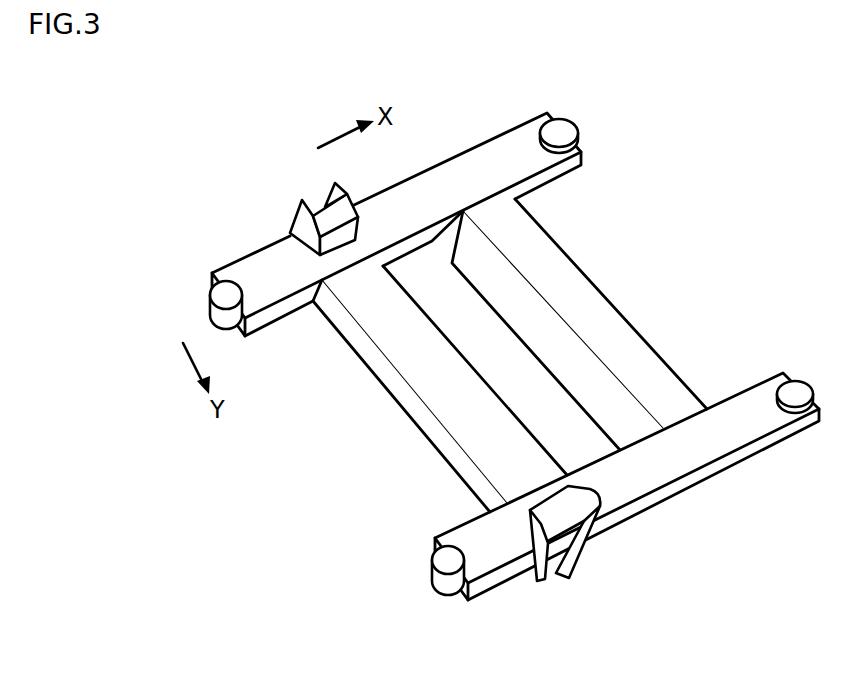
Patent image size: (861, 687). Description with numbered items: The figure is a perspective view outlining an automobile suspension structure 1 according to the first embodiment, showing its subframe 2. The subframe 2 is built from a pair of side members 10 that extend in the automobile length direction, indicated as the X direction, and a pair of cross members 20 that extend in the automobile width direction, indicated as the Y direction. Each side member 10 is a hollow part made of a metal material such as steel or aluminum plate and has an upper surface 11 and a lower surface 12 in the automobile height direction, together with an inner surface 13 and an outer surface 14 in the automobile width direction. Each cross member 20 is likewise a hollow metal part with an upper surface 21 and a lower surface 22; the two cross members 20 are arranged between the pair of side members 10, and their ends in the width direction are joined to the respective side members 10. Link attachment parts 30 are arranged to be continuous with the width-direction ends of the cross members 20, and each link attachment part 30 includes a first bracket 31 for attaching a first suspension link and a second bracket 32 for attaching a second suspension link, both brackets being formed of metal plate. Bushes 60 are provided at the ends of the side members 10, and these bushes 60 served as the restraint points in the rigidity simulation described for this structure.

The automobile suspension structure 1 is at (732, 198).
The subframe 2 is at (620, 252).
The side member 10 is at (258, 245).
The upper surface 11 is at (408, 205).
The lower surface 12 is at (417, 248).
The inner surface 13 is at (287, 303).
The outer surface 14 is at (715, 470).
The cross member 20 is at (632, 318).
The upper surface 21 is at (417, 375).
The lower surface 22 is at (443, 462).
The link attachment part 30 is at (298, 197).
The first bracket 31 is at (523, 578).
The second bracket 32 is at (598, 535).
The bush 60 is at (561, 127).